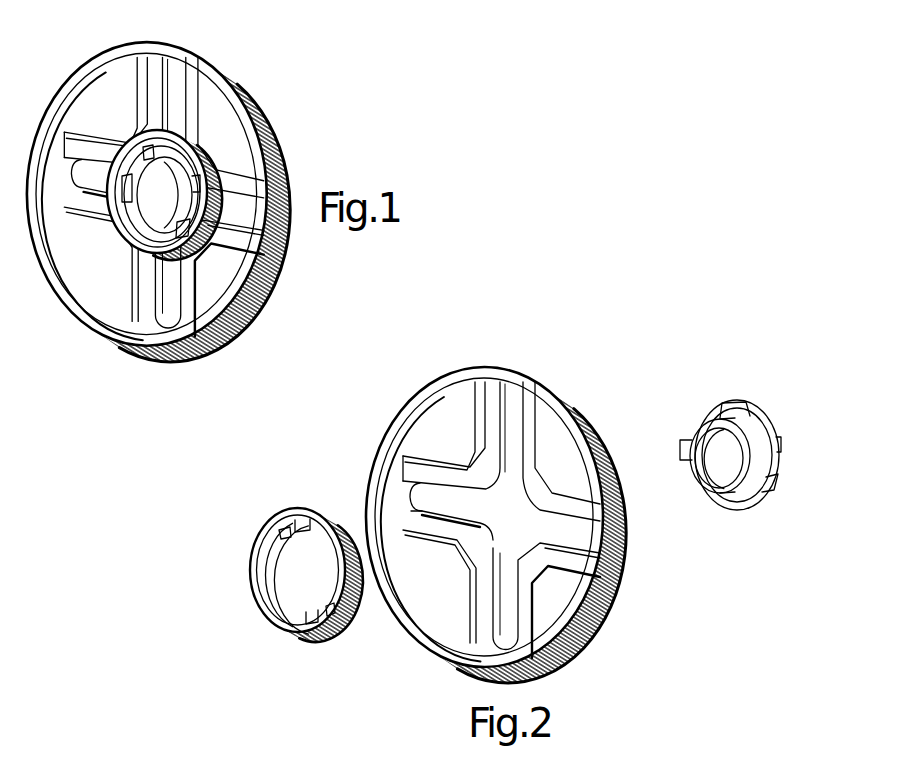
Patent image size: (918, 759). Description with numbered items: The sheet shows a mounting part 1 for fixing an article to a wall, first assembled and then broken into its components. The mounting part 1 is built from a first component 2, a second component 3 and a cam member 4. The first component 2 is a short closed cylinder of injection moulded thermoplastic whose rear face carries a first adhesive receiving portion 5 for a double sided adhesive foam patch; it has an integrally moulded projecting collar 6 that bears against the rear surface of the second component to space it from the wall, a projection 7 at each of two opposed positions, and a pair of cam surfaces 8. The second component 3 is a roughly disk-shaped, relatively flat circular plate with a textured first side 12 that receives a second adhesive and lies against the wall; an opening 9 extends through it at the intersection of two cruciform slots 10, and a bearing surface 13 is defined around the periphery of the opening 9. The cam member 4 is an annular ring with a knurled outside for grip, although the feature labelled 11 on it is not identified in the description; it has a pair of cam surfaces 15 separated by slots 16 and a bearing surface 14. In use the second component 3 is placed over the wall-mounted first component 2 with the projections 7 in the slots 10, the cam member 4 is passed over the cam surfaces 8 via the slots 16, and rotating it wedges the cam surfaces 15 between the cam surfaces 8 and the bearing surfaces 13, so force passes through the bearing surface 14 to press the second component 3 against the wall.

In FIG. 1, the mounting part 1 is at (248, 60).
In FIG. 2, the first component 2 is at (708, 450).
In FIG. 2, the second component 3 is at (487, 367).
In FIG. 2, the cam member 4 is at (262, 498).
In FIG. 2, the first adhesive receiving portion 5 is at (782, 443).
In FIG. 2, the projecting collar 6 is at (761, 422).
In FIG. 2, the projection 7 is at (741, 412).
In FIG. 2, the cam surfaces 8 is at (680, 450).
In FIG. 2, the opening 9 is at (520, 527).
In FIG. 2, the cruciform slots 10 is at (425, 492).
In FIG. 2, the knurled toothing 11 is at (557, 396).
In FIG. 2, the first side 12 is at (596, 432).
In FIG. 2, the bearing surface 13 is at (476, 471).
In FIG. 2, the bearing surface 14 is at (356, 624).
In FIG. 2, the cam surfaces 15 is at (306, 525).
In FIG. 2, the slots 16 is at (286, 533).